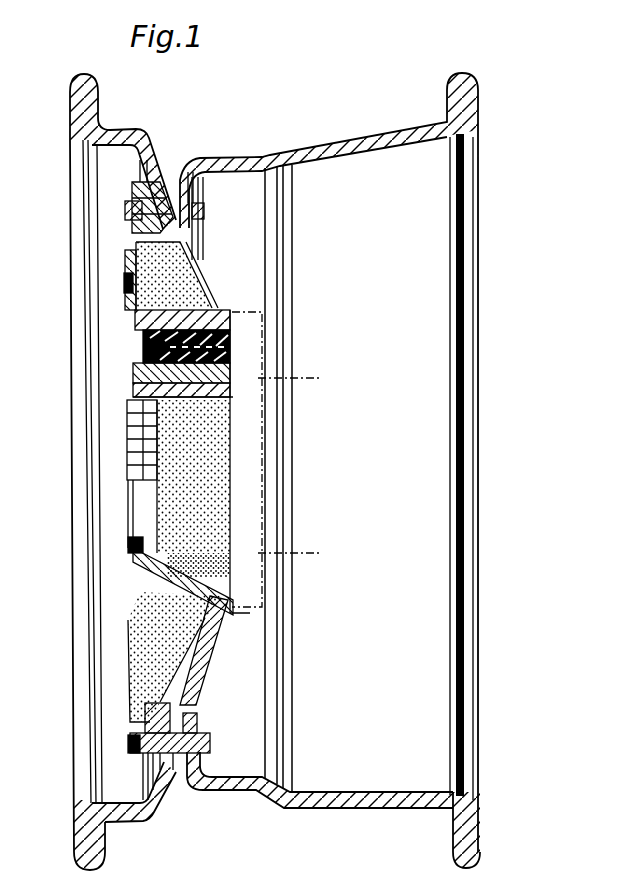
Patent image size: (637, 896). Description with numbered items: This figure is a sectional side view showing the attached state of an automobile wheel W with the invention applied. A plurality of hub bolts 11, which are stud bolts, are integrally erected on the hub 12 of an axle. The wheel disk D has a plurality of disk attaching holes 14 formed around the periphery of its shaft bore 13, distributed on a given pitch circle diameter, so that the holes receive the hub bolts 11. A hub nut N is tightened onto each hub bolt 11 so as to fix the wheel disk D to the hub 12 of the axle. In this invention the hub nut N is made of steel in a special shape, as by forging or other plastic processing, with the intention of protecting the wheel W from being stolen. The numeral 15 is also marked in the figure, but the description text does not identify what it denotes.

The automobile wheel W is at (482, 448).
The wheel disk D is at (132, 234).
The hub nut N is at (145, 338).
The hub bolts 11 is at (232, 346).
The hub 12 is at (248, 610).
The shaft bore 13 is at (146, 536).
The disk attaching holes 14 is at (143, 367).
The spacer 15 is at (212, 374).